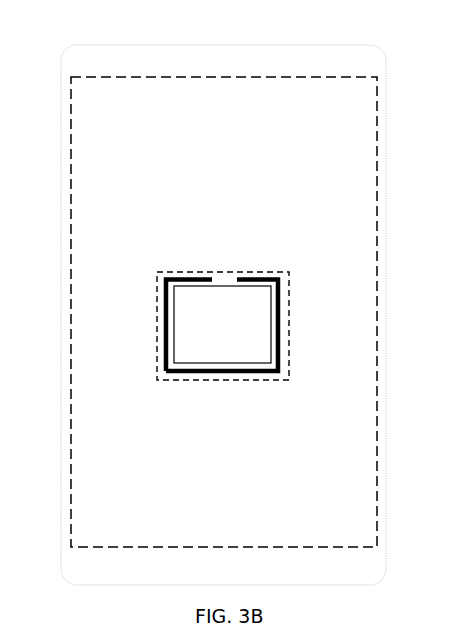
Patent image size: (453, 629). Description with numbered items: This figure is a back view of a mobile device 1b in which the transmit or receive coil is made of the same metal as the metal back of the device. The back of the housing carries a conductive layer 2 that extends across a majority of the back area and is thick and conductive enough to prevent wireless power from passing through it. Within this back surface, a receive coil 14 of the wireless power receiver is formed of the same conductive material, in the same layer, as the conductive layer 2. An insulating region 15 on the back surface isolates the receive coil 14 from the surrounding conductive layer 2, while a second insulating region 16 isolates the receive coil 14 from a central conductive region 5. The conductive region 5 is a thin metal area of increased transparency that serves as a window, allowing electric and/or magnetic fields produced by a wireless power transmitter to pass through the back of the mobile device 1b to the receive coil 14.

The mobile device 1b is at (60, 44).
The conductive layer 2 is at (224, 124).
The conductive region 5 is at (229, 331).
The receive coil 14 is at (165, 308).
The insulating region 15 is at (181, 375).
The insulating region 16 is at (252, 368).